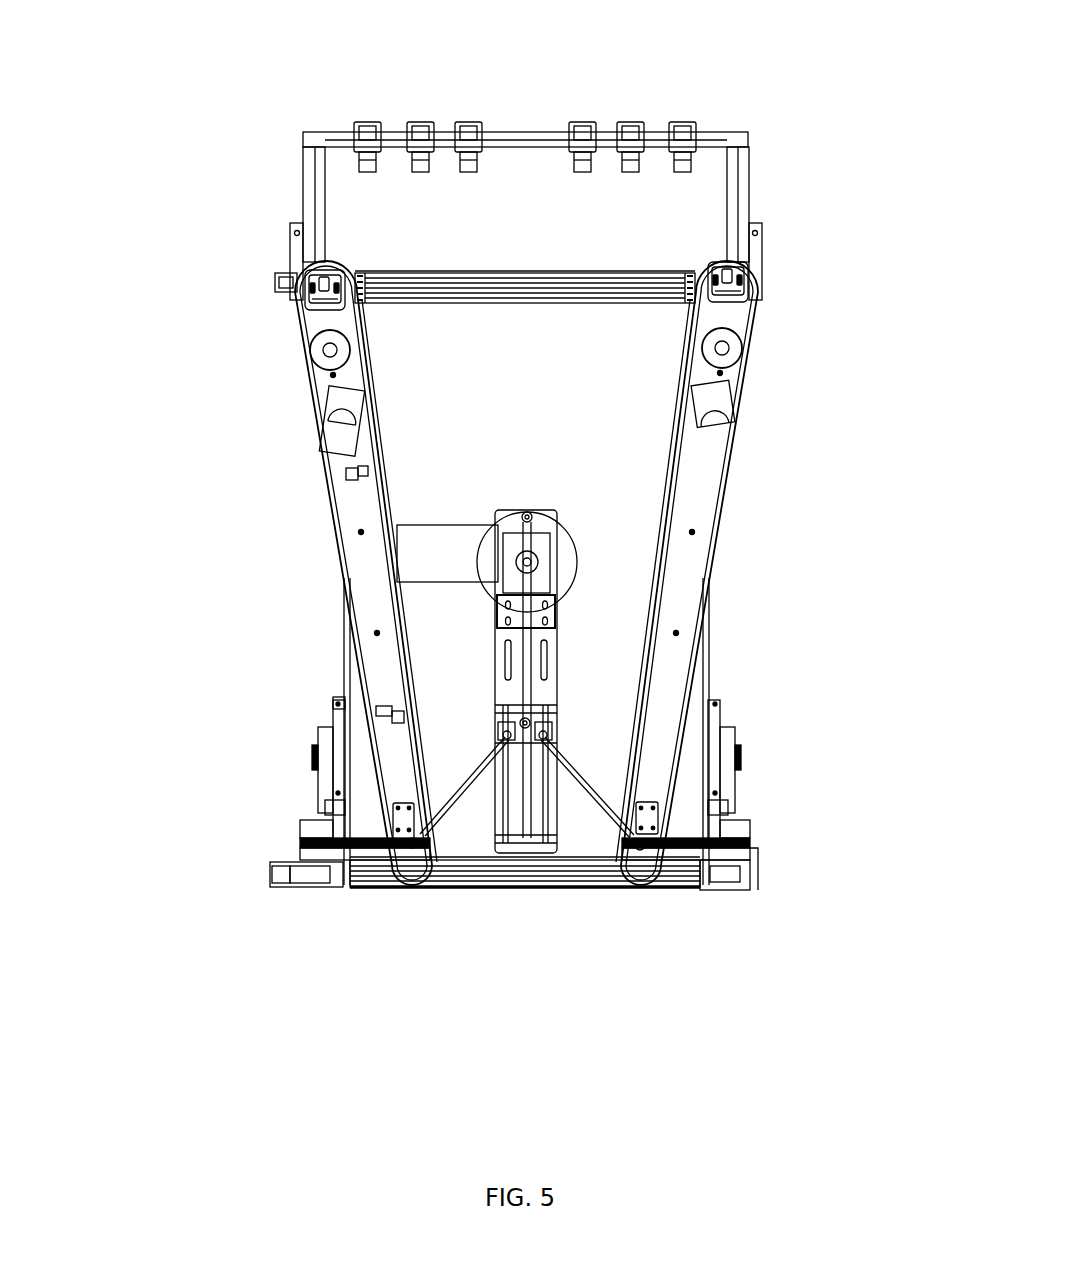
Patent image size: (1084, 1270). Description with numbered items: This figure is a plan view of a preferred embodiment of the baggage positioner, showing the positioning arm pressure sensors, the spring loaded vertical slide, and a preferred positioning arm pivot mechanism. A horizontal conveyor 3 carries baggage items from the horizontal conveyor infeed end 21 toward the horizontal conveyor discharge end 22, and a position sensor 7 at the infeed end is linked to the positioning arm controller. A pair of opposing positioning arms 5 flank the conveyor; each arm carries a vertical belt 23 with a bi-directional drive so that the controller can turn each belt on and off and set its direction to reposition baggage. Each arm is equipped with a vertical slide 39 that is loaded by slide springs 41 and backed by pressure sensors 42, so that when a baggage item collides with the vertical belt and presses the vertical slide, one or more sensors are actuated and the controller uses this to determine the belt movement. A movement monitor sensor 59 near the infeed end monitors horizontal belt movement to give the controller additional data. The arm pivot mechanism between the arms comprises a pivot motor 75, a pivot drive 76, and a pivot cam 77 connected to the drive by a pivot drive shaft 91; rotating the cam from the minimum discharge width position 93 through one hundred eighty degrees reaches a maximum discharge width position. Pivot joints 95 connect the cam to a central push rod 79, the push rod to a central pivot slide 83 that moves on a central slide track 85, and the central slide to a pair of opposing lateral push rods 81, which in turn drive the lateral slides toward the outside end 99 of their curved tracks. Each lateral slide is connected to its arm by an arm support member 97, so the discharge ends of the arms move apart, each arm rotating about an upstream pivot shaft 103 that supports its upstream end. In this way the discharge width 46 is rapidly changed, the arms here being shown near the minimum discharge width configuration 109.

The horizontal conveyor 3 is at (615, 791).
The positioning arms 5 is at (506, 573).
The position sensor 7 is at (525, 96).
The horizontal conveyor infeed end 21 is at (525, 193).
The horizontal conveyor discharge end 22 is at (525, 921).
The vertical belt 23 is at (526, 581).
The vertical slide 39 is at (526, 675).
The slide springs 41 is at (400, 717).
The pressure sensors 42 is at (350, 475).
The discharge width 46 is at (430, 890).
The movement monitor sensor 59 is at (452, 301).
The pivot motor 75 is at (390, 561).
The pivot drive 76 is at (670, 651).
The pivot cam 77 is at (430, 574).
The central push rod 79 is at (651, 636).
The lateral push rods 81 is at (670, 767).
The central pivot slide 83 is at (655, 733).
The central slide track 85 is at (610, 751).
The pivot drive shaft 91 is at (674, 485).
The minimum discharge width position 93 is at (670, 526).
The pivot joints 95 is at (676, 604).
The arm support member 97 is at (514, 934).
The outside end 99 is at (498, 780).
The upstream pivot shaft 103 is at (538, 341).
The minimum discharge width configuration 109 is at (591, 475).